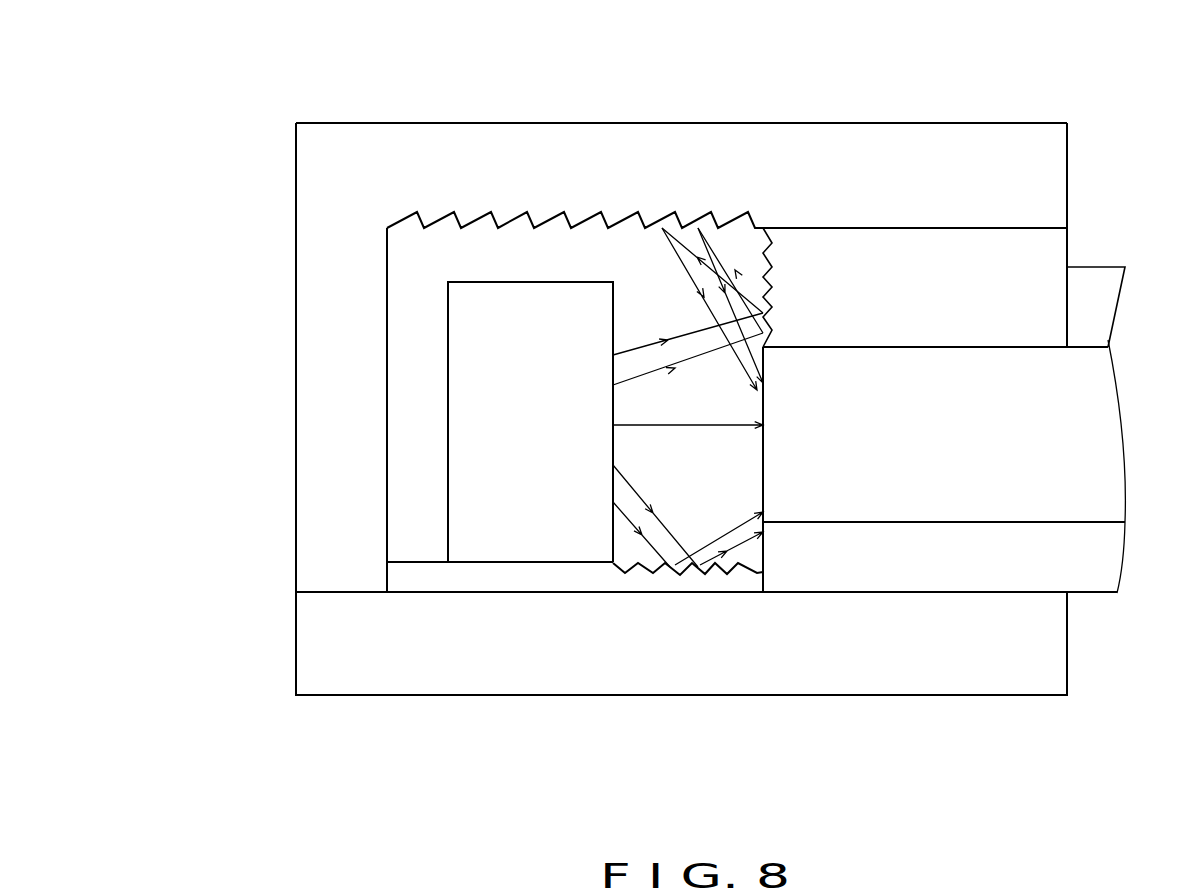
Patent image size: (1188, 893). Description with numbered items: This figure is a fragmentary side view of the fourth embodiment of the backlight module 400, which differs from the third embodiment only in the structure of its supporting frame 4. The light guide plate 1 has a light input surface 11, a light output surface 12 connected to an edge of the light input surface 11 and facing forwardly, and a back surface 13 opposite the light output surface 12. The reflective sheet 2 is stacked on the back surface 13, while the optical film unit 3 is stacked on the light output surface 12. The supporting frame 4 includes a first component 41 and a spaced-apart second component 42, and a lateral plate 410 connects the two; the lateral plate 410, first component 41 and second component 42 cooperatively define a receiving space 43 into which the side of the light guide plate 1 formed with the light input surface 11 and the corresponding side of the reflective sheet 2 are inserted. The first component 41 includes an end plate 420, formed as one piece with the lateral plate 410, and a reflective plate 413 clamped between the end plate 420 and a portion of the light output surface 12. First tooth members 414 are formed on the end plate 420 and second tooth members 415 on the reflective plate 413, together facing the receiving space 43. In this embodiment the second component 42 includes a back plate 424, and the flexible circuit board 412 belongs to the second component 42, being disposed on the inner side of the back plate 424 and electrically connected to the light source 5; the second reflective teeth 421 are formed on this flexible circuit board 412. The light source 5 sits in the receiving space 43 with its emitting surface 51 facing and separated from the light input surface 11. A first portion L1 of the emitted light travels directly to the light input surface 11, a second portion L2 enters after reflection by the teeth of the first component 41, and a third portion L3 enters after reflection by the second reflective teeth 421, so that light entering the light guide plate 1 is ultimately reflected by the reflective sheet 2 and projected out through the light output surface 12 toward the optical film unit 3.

The backlight module 400 is at (208, 76).
The supporting frame 4 is at (270, 182).
The first component 41 is at (658, 113).
The lateral plate 410 is at (350, 550).
The second component 42 is at (585, 698).
The back plate 424 is at (720, 660).
The flexible circuit board 412 is at (508, 577).
The first tooth members 414 is at (470, 215).
The second tooth members 415 is at (760, 228).
The reflective plate 413 is at (943, 260).
The end plate 420 is at (673, 177).
The second reflective teeth 421 is at (638, 573).
The receiving space 43 is at (600, 262).
The light source 5 is at (457, 483).
The emitting surface 51 is at (617, 565).
The first portion of light L1 is at (688, 408).
The second portion of light L2 is at (688, 313).
The third portion of light L3 is at (688, 516).
The light guide plate 1 is at (1077, 468).
The light input surface 11 is at (763, 475).
The light output surface 12 is at (1102, 345).
The optical film unit 3 is at (1077, 297).
The back surface 13 is at (1007, 522).
The reflective sheet 2 is at (912, 565).